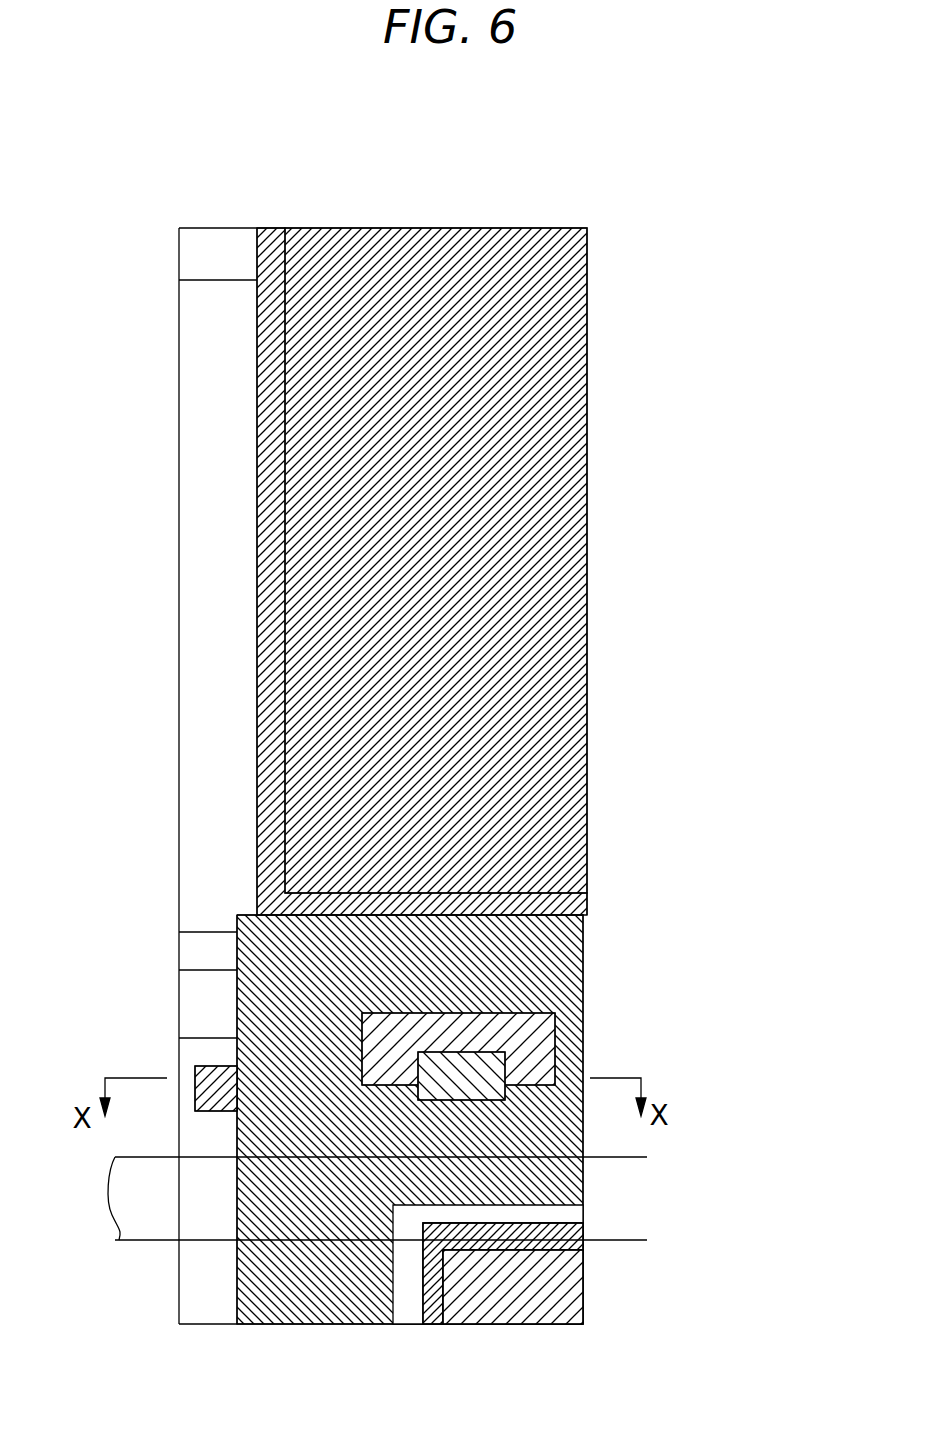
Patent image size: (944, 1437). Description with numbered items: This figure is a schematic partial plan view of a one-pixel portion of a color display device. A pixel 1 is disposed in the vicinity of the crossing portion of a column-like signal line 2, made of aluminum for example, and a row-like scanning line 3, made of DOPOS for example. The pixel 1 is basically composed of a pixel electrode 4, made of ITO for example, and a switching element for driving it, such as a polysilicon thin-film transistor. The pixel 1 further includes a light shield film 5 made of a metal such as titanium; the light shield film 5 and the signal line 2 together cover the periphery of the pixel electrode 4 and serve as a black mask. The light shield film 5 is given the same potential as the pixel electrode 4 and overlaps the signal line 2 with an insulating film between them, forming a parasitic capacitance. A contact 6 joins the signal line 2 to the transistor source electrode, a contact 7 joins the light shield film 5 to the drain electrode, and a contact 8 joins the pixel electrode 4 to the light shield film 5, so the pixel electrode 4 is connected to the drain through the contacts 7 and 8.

The pixel 1 is at (612, 345).
The signal line 2 is at (207, 432).
The scanning line 3 is at (647, 1157).
The pixel electrode 4 is at (537, 572).
The light shield film 5 is at (536, 972).
The contact 6 is at (207, 1066).
The contact 7 is at (532, 1043).
The contact 8 is at (533, 1066).